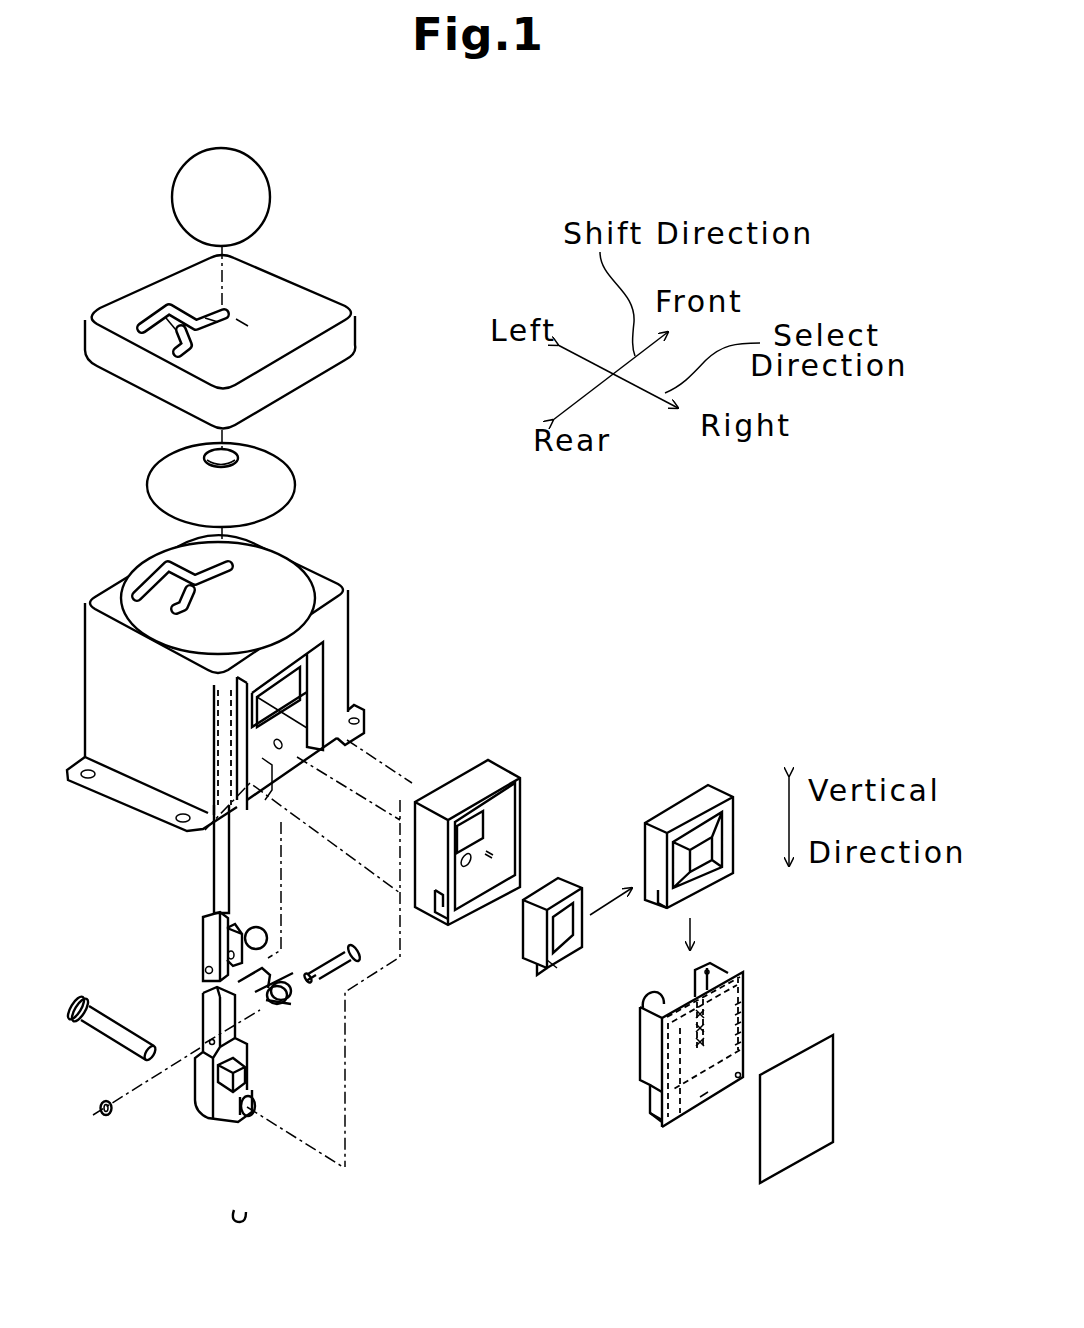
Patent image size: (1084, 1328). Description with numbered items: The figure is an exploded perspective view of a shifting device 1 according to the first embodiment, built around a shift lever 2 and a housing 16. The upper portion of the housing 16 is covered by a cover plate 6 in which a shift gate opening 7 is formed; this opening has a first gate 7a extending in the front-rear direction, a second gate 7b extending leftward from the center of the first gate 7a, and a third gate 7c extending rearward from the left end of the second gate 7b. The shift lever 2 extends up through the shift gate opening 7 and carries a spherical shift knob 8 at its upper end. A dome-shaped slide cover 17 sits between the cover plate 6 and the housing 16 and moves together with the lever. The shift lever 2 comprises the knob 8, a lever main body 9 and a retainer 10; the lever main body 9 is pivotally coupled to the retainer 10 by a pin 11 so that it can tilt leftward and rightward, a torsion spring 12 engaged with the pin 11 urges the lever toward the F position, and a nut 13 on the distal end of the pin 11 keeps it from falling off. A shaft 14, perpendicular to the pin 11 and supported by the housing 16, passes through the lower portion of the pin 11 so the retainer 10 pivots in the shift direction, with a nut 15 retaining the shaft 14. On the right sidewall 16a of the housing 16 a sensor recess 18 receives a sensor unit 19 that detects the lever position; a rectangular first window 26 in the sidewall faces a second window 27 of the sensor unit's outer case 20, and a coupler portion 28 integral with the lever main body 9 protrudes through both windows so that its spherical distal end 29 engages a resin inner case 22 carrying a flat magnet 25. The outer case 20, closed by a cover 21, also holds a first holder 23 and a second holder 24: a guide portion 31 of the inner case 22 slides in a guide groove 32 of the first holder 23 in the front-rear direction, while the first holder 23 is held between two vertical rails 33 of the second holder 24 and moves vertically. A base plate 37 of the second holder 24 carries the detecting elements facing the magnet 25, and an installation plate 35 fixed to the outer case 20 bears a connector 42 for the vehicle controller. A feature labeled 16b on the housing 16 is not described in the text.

The shifting device 1 is at (499, 275).
The shift lever 2 is at (208, 880).
The cover plate 6 is at (354, 337).
The shift gate opening 7 is at (150, 334).
The first gate 7a is at (236, 320).
The second gate 7b is at (209, 308).
The third gate 7c is at (170, 318).
The shift knob 8 is at (262, 162).
The lever main body 9 is at (213, 854).
The retainer 10 is at (206, 1122).
The pin 11 is at (332, 948).
The torsion spring 12 is at (291, 1006).
The nut 13 is at (112, 1122).
The shaft 14 is at (120, 1008).
The nut 15 is at (246, 1218).
The housing 16 is at (323, 577).
The right sidewall 16a is at (262, 758).
The hole 16b is at (274, 743).
The slide cover 17 is at (290, 470).
The sensor recess 18 is at (318, 660).
The sensor unit 19 is at (703, 727).
The outer case 20 is at (472, 822).
The cover 21 is at (801, 1162).
The inner case 22 is at (527, 916).
The first holder 23 is at (674, 844).
The second holder 24 is at (699, 1032).
The magnet 25 is at (556, 932).
The first window 26 is at (260, 724).
The second window 27 is at (466, 818).
The coupler portion 28 is at (245, 898).
The distal end 29 is at (253, 930).
The guide portion 31 is at (557, 970).
The guide groove 32 is at (660, 901).
The rails 33 is at (646, 994).
The installation plate 35 is at (714, 1094).
The base plate 37 is at (745, 1030).
The connector 42 is at (648, 1106).